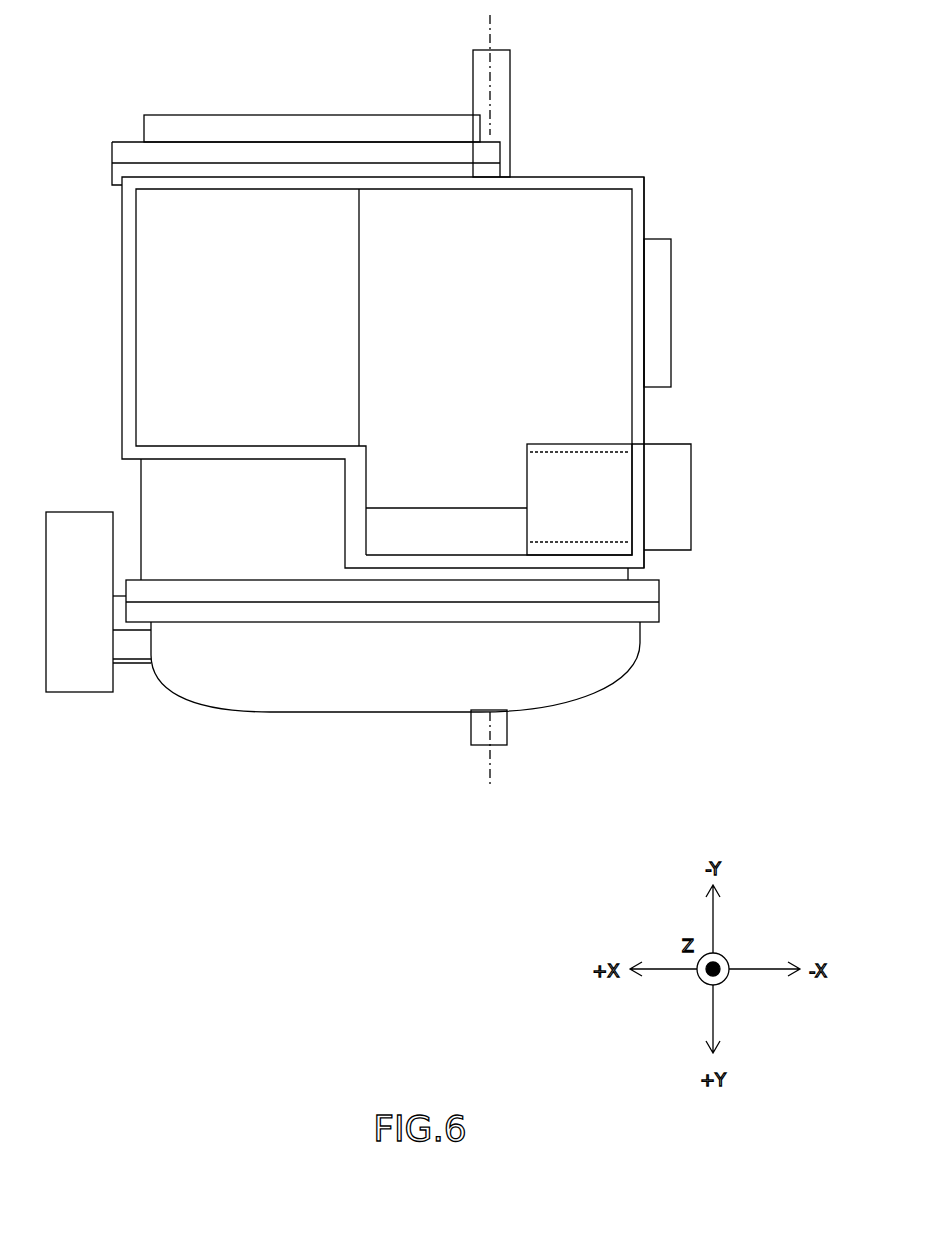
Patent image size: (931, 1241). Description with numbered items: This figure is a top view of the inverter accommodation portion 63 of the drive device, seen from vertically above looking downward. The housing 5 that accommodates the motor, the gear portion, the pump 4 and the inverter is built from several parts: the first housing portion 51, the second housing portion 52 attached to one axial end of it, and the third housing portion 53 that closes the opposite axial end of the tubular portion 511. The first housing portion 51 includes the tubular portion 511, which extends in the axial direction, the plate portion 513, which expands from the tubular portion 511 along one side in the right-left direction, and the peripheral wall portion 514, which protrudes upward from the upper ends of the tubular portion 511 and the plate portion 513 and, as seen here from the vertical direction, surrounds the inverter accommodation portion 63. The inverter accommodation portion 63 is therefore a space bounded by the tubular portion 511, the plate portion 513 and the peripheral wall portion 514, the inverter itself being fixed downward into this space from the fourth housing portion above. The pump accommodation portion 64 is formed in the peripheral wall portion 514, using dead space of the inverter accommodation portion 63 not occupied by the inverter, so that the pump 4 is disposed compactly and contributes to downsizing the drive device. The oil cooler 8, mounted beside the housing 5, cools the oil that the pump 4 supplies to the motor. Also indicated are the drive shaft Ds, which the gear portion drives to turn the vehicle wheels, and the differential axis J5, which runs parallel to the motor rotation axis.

The housing 5 is at (112, 370).
The third housing portion 53 is at (218, 118).
The drive shaft Ds is at (503, 102).
The differential axis J5 is at (492, 22).
The tubular portion 511 is at (233, 292).
The plate portion 513 is at (565, 225).
The peripheral wall portion 514 is at (638, 335).
The inverter accommodation portion 63 is at (470, 346).
The pump accommodation portion 64 is at (571, 436).
The pump 4 is at (674, 510).
The oil cooler 8 is at (668, 290).
The first housing portion 51 is at (150, 490).
The second housing portion 52 is at (598, 675).